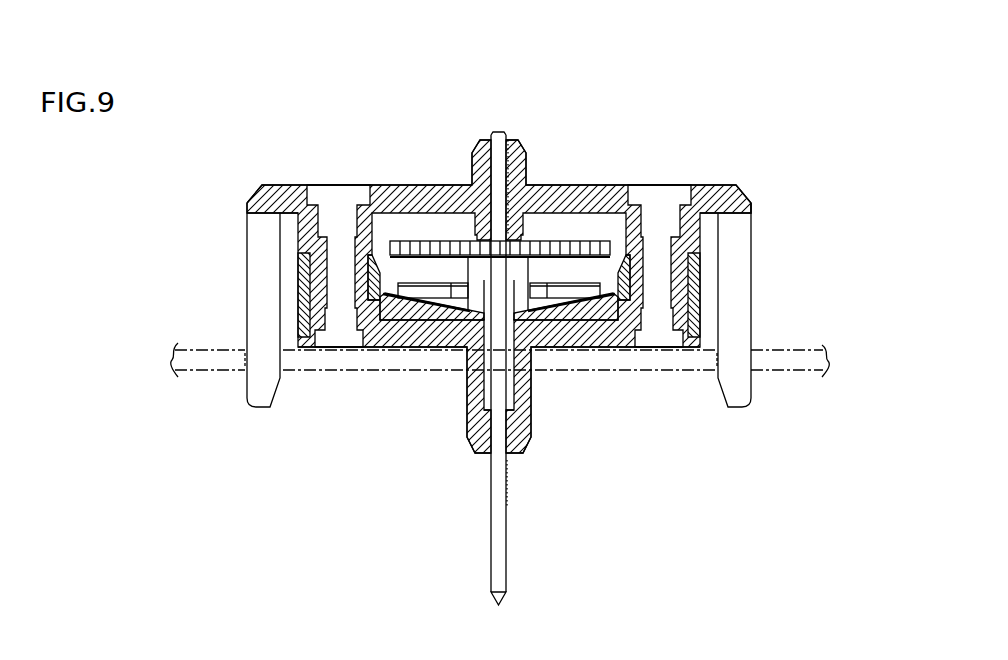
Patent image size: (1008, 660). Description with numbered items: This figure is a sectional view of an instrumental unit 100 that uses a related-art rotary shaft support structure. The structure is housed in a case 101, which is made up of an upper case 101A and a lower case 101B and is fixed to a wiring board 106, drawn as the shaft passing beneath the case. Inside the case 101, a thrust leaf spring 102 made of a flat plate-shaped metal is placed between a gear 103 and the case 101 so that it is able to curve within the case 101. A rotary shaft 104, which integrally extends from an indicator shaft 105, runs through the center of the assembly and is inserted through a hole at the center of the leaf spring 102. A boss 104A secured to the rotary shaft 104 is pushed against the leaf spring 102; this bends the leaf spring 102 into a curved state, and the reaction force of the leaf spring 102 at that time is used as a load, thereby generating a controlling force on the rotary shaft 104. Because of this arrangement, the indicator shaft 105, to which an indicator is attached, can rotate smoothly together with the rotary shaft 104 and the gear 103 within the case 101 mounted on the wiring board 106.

The sensor assembly 100 is at (592, 120).
The case 101 is at (770, 178).
The upper case 101A is at (388, 184).
The lower case 101B is at (384, 349).
The thrust leaf spring 102 is at (538, 290).
The gear 103 is at (432, 238).
The rotary shaft 104 is at (497, 131).
The boss 104A is at (518, 265).
The indicator shaft 105 is at (487, 535).
The wiring board 106 is at (803, 347).